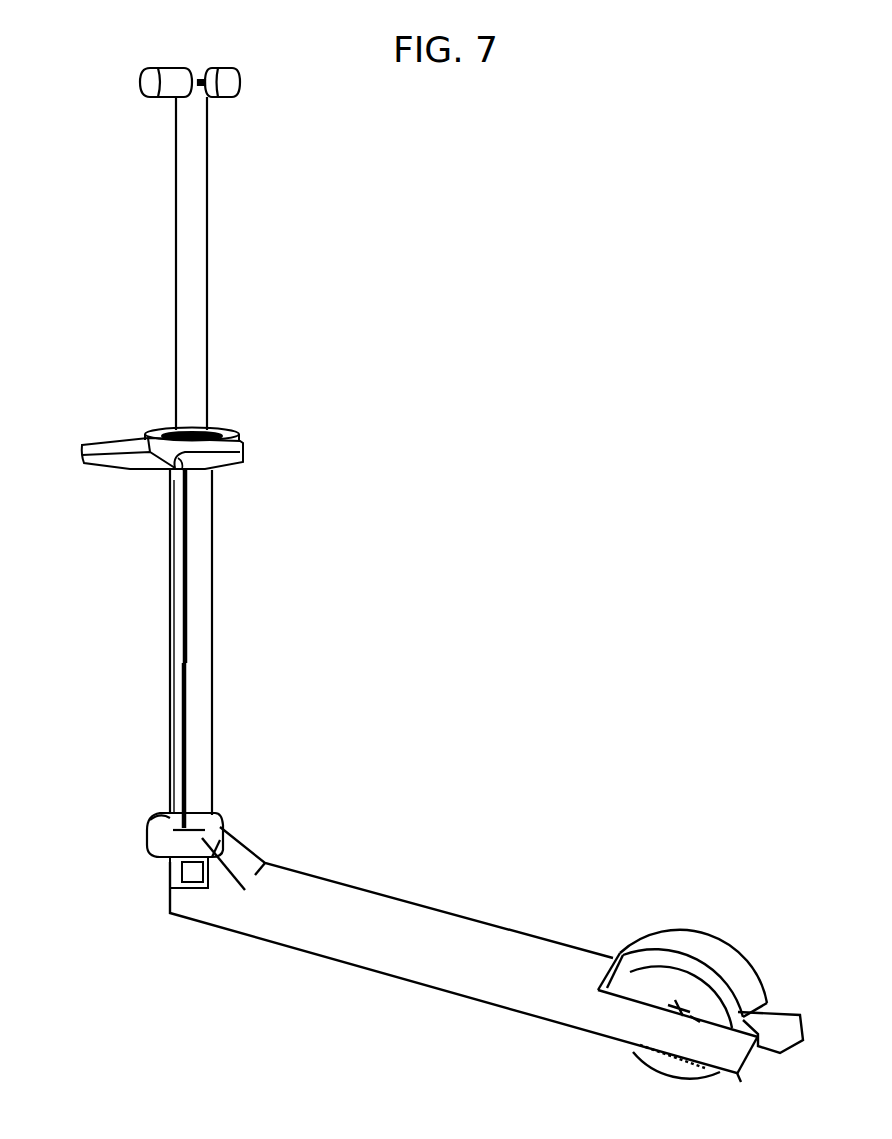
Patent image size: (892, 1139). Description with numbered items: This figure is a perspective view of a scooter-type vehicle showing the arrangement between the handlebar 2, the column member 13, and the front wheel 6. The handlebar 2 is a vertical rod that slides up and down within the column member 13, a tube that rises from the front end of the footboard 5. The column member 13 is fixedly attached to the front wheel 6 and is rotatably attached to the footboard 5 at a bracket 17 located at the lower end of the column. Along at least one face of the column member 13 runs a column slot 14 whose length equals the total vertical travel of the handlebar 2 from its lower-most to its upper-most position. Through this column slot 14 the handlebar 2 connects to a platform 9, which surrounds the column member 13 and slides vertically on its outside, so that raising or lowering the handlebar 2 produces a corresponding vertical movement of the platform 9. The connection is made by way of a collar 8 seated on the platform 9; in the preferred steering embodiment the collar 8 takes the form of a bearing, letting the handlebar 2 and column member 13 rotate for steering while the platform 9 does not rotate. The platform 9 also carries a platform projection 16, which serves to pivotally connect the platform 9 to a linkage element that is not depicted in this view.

The handlebar 2 is at (190, 201).
The footboard 5 is at (318, 912).
The front wheel 6 is at (167, 875).
The collar 8 is at (218, 430).
The platform 9 is at (107, 442).
The column member 13 is at (190, 675).
The column slot 14 is at (173, 737).
The platform projection 16 is at (172, 468).
The bracket 17 is at (165, 838).